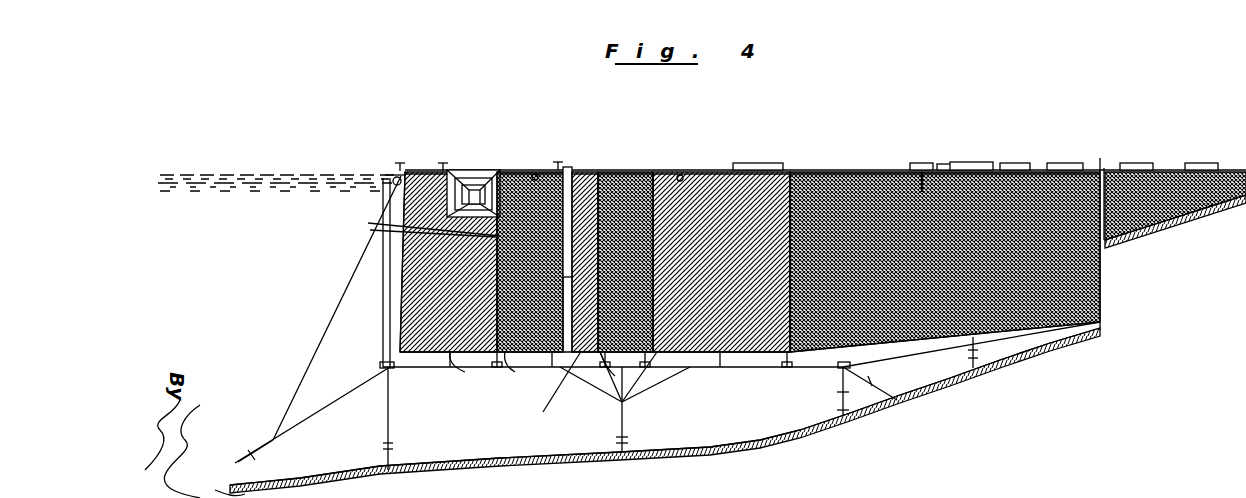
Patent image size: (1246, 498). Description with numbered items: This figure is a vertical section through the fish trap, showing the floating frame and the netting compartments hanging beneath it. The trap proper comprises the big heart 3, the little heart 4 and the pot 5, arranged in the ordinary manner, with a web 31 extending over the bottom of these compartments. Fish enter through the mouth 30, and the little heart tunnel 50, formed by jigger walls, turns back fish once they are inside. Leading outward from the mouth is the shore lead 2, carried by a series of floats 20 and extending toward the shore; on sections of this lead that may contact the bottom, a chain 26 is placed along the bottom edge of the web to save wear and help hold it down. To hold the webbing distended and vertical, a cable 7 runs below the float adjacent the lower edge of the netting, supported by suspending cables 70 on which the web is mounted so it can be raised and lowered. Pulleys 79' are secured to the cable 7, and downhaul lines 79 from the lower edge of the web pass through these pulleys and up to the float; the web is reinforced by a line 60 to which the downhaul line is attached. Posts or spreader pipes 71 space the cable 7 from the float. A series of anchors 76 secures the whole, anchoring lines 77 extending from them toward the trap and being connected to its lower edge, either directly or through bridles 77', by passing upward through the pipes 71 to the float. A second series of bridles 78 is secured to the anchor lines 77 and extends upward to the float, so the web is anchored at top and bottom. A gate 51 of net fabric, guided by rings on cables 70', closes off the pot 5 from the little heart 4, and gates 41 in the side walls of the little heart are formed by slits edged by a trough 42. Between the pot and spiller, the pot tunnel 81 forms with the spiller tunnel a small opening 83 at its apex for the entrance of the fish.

The shore lead 2 is at (922, 168).
The big heart 3 is at (733, 203).
The little heart 4 is at (550, 393).
The pot 5 is at (424, 342).
The cable 7 is at (450, 357).
The floats 20 is at (1053, 163).
The chain 26 is at (1158, 208).
The mouth 30 is at (796, 172).
The web 31 is at (723, 367).
The gate 41 is at (615, 165).
The trough 42 is at (580, 167).
The little heart tunnel 50 is at (500, 207).
The gate 51 is at (483, 197).
The reinforcing line 60 is at (418, 224).
The suspending cables 70 is at (619, 372).
The cables 70' is at (523, 374).
The spreader pipe 71 is at (388, 320).
The anchors 76 is at (390, 462).
The anchoring lines 77 is at (606, 407).
The bridles 77' is at (428, 415).
The bridles 78 is at (348, 273).
The downhaul lines 79 is at (431, 343).
The pulleys 79' is at (587, 377).
The pot tunnel 81 is at (460, 200).
The opening 83 is at (457, 197).